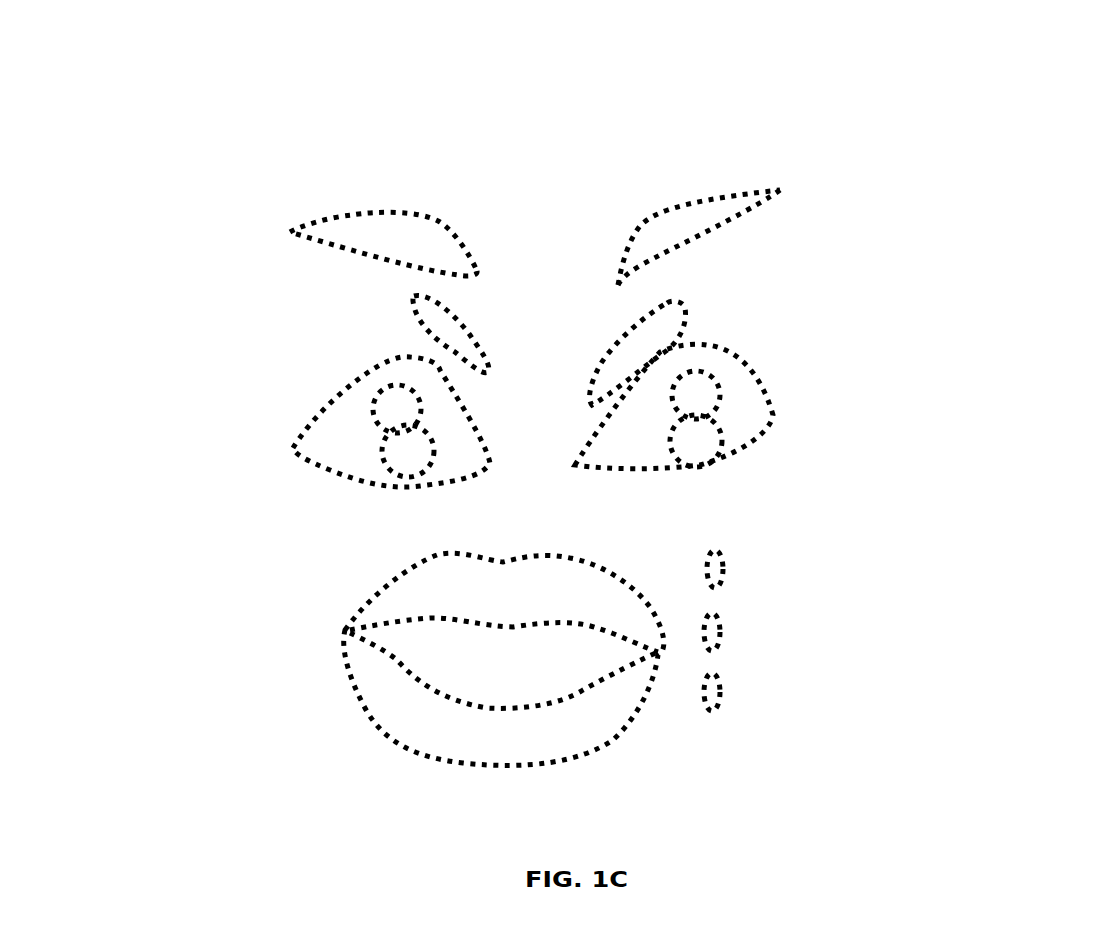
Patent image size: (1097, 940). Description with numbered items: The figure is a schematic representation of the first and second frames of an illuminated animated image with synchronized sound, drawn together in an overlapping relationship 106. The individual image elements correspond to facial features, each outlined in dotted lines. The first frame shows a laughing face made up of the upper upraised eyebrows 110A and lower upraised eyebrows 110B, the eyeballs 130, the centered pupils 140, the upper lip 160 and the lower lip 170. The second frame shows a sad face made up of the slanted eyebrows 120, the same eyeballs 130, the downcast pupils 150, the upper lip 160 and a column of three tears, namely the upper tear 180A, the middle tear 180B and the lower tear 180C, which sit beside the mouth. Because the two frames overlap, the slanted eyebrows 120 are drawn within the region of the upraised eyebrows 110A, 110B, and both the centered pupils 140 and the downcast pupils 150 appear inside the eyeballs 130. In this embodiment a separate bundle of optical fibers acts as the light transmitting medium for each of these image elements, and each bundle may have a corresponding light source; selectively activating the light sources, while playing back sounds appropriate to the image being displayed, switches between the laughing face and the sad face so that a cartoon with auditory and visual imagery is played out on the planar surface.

The overlapping relationship 106 is at (692, 75).
The upper upraised eyebrows 110A is at (665, 207).
The lower upraised eyebrows 110B is at (683, 253).
The slanted eyebrows 120 is at (477, 332).
The eyeballs 130 is at (660, 355).
The centered pupils 140 is at (423, 410).
The downcast pupils 150 is at (672, 440).
The upper lip 160 is at (603, 565).
The lower lip 170 is at (347, 660).
The upper tear 180A is at (723, 568).
The middle tear 180B is at (723, 637).
The lower tear 180C is at (723, 692).